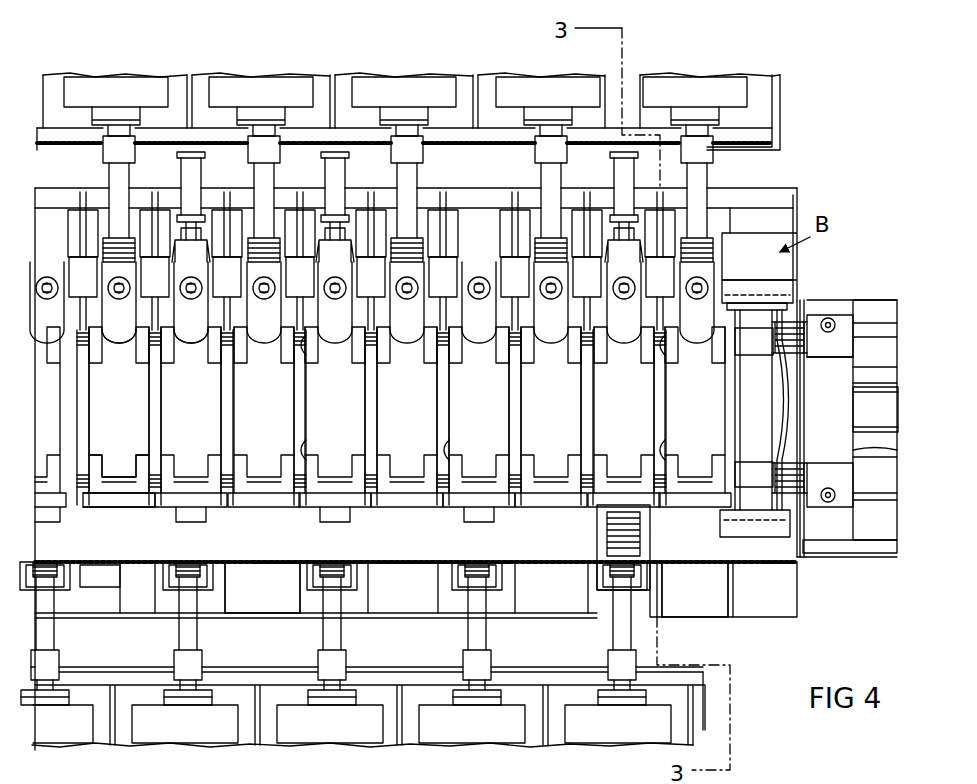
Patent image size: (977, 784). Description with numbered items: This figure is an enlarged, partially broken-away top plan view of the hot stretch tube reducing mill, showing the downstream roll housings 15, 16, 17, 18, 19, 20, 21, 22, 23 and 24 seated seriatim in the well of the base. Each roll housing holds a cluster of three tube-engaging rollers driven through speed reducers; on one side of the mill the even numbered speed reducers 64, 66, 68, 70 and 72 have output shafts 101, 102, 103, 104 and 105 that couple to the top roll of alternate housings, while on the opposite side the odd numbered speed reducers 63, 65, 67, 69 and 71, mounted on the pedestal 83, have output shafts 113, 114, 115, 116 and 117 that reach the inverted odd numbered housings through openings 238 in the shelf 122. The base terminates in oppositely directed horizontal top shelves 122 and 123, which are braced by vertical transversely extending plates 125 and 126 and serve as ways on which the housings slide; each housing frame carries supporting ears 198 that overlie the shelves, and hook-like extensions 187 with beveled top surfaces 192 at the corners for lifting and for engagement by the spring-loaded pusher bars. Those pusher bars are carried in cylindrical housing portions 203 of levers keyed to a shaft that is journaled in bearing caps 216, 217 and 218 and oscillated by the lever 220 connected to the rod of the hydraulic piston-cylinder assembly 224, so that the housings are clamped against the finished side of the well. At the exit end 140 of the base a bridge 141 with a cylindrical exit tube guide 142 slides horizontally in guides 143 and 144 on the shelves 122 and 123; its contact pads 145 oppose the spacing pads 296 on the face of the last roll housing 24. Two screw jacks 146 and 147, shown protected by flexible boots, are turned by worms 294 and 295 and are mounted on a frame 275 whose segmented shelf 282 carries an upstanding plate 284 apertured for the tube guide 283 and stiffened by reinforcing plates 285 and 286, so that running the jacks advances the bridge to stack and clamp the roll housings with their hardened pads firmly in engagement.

The roll housing 15 is at (50, 424).
The roll housing 16 is at (119, 417).
The roll housing 17 is at (191, 417).
The roll housing 18 is at (264, 417).
The roll housing 19 is at (335, 417).
The roll housing 20 is at (407, 417).
The roll housing 21 is at (479, 417).
The roll housing 22 is at (551, 417).
The roll housing 23 is at (624, 417).
The roll housing 24 is at (695, 417).
The speed reducer 63 is at (63, 724).
The speed reducer 65 is at (185, 724).
The speed reducer 67 is at (330, 724).
The speed reducer 69 is at (472, 724).
The speed reducer 71 is at (618, 724).
The speed reducer 64 is at (116, 101).
The speed reducer 66 is at (261, 101).
The speed reducer 68 is at (404, 101).
The speed reducer 70 is at (548, 101).
The speed reducer 72 is at (695, 101).
The pedestal 83 is at (279, 670).
The output shaft 101 is at (112, 182).
The output shaft 102 is at (272, 182).
The output shaft 103 is at (415, 182).
The output shaft 104 is at (545, 182).
The output shaft 105 is at (700, 182).
The output shaft 113 is at (53, 636).
The output shaft 114 is at (194, 636).
The output shaft 115 is at (336, 636).
The output shaft 116 is at (481, 636).
The output shaft 117 is at (614, 636).
The top shelf 122 is at (690, 578).
The top shelf 123 is at (796, 272).
The vertical transversely extending plate 125 is at (292, 588).
The vertical transversely extending plate 126 is at (508, 236).
The exit end 140 is at (815, 566).
The bridge 141 is at (797, 373).
The cylindrical exit tube guide 142 is at (745, 420).
The guide 143 is at (760, 530).
The guide 144 is at (755, 283).
The contact pad 145 is at (745, 356).
The screw jack 146 is at (792, 322).
The screw jack 147 is at (798, 464).
The extension 187 is at (116, 466).
The beveled top surface 192 is at (112, 496).
The supporting ear 198 is at (118, 504).
The cylindrical housing portion 203 is at (119, 340).
The bearing cap 216 is at (227, 293).
The bearing cap 217 is at (155, 293).
The bearing cap 218 is at (83, 293).
The lever 220 is at (191, 340).
The hydraulic piston-cylinder assembly 224 is at (202, 182).
The opening 238 is at (493, 532).
The frame 275 is at (898, 546).
The reinforcing shelf 282 is at (895, 345).
The tube guide 283 is at (900, 407).
The upstanding plate 284 is at (898, 456).
The reinforcing plate 285 is at (892, 496).
The reinforcing plate 286 is at (893, 326).
The worm 294 is at (853, 320).
The worm 295 is at (828, 505).
The spacing pad 296 is at (307, 356).